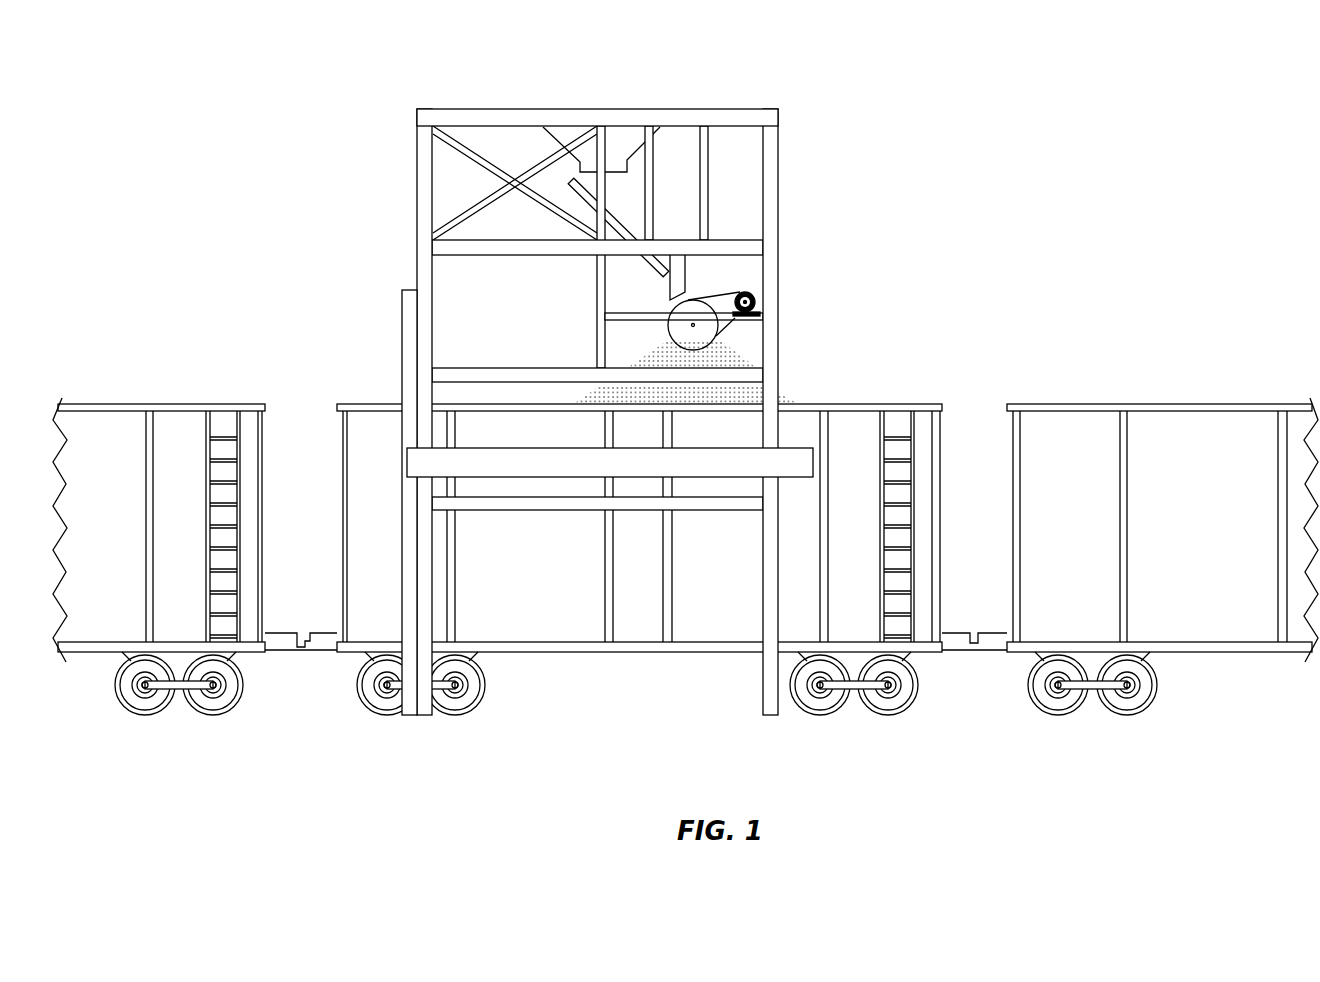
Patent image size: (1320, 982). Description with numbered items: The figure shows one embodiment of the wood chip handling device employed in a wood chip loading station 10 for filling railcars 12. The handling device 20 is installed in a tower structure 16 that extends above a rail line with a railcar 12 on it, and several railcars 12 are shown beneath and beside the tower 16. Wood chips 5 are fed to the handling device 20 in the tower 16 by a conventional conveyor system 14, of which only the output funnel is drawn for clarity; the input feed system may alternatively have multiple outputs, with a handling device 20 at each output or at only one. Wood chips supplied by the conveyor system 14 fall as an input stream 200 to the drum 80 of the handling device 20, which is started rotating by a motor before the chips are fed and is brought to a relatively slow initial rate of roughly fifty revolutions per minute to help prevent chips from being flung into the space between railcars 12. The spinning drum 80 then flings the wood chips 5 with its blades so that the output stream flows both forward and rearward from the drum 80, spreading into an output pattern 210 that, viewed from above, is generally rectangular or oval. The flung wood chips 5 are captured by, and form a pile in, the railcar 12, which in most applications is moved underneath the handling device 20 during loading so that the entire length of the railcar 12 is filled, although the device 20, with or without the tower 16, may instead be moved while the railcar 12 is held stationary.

The wood chip loading station 10 is at (638, 369).
The railcar 12 is at (110, 430).
The conveyor system 14 is at (627, 143).
The tower structure 16 is at (428, 187).
The wood chip handling device 20 is at (585, 292).
The drum 80 is at (678, 328).
The input stream 200 is at (613, 186).
The wood chips 5 is at (719, 371).
The output pattern 210 is at (748, 390).